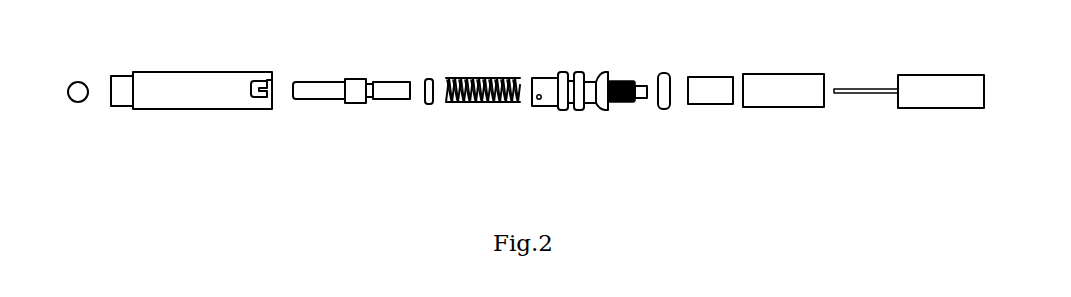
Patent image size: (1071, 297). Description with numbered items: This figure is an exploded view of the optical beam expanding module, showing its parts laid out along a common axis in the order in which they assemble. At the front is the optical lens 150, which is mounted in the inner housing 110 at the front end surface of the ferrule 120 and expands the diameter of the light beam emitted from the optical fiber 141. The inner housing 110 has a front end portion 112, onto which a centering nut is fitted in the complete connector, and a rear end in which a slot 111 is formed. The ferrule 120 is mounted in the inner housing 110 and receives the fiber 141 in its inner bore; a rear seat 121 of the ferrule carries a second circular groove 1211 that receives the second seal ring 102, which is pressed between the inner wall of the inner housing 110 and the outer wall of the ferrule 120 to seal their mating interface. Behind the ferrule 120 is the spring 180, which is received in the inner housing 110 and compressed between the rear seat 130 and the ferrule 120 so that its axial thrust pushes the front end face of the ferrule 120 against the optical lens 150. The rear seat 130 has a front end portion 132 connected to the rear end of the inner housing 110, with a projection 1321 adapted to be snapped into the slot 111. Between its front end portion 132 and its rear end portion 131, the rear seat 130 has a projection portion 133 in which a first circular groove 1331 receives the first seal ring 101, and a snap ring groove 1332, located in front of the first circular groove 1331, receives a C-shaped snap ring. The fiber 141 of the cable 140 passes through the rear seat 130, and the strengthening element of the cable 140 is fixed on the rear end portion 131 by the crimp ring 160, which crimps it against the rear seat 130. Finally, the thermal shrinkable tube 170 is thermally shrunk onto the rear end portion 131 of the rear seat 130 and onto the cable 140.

The first seal ring 101 is at (660, 111).
The second seal ring 102 is at (430, 106).
The inner housing 110 is at (195, 82).
The slot 111 is at (257, 102).
The front end portion 112 is at (127, 101).
The ferrule 120 is at (338, 82).
The rear seat of the ferrule 121 is at (357, 104).
The second circular groove 1211 is at (373, 82).
The rear seat 130 is at (563, 105).
The rear end portion 131 is at (621, 101).
The front end portion 132 is at (548, 85).
The projection 1321 is at (539, 100).
The projection portion 133 is at (580, 108).
The first circular groove 1331 is at (590, 73).
The snap ring groove 1332 is at (569, 74).
The cable 140 is at (929, 81).
The optical fiber 141 is at (866, 94).
The optical lens 150 is at (86, 83).
The crimp ring 160 is at (710, 82).
The thermal shrinkable tube 170 is at (773, 82).
The spring 180 is at (477, 105).